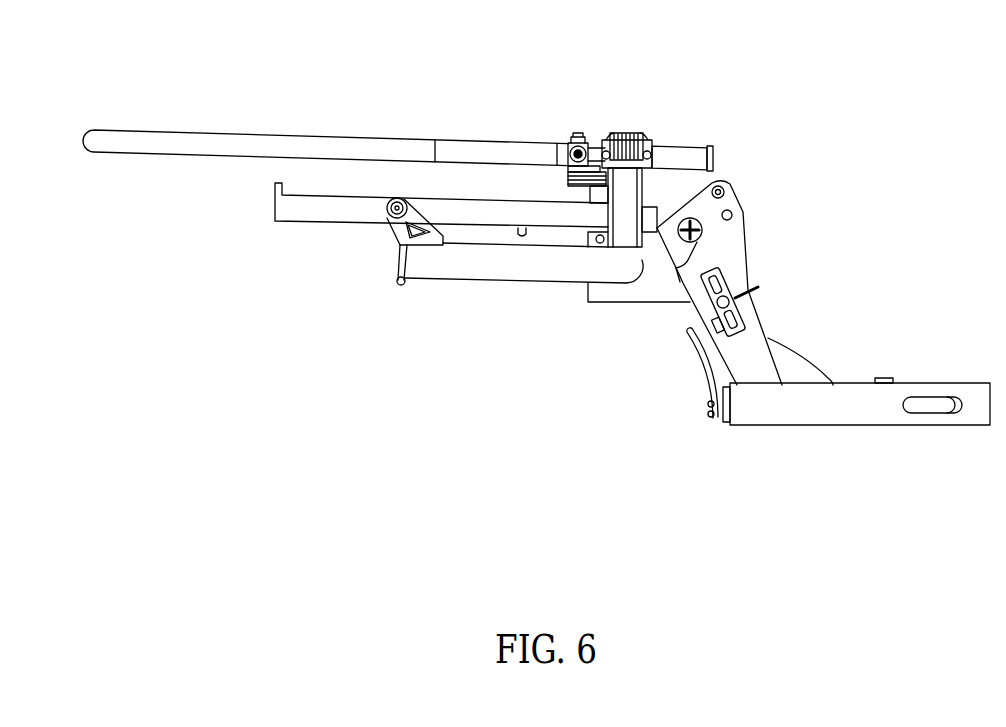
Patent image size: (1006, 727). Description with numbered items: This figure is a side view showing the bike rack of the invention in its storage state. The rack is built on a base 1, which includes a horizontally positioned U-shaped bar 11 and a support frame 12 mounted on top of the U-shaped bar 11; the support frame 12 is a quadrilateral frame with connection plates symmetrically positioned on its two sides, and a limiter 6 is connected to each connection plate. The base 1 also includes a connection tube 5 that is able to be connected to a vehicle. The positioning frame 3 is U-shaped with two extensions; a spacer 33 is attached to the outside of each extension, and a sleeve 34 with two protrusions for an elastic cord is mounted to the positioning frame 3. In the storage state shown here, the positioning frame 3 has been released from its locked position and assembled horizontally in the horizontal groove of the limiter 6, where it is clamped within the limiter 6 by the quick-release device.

The base 1 is at (585, 282).
The positioning frame 3 is at (330, 143).
The connection tube 5 is at (767, 335).
The limiter 6 is at (623, 232).
The U-shaped bar 11 is at (525, 274).
The support frame 12 is at (340, 213).
The spacer 33 is at (652, 145).
The sleeve 34 is at (568, 143).